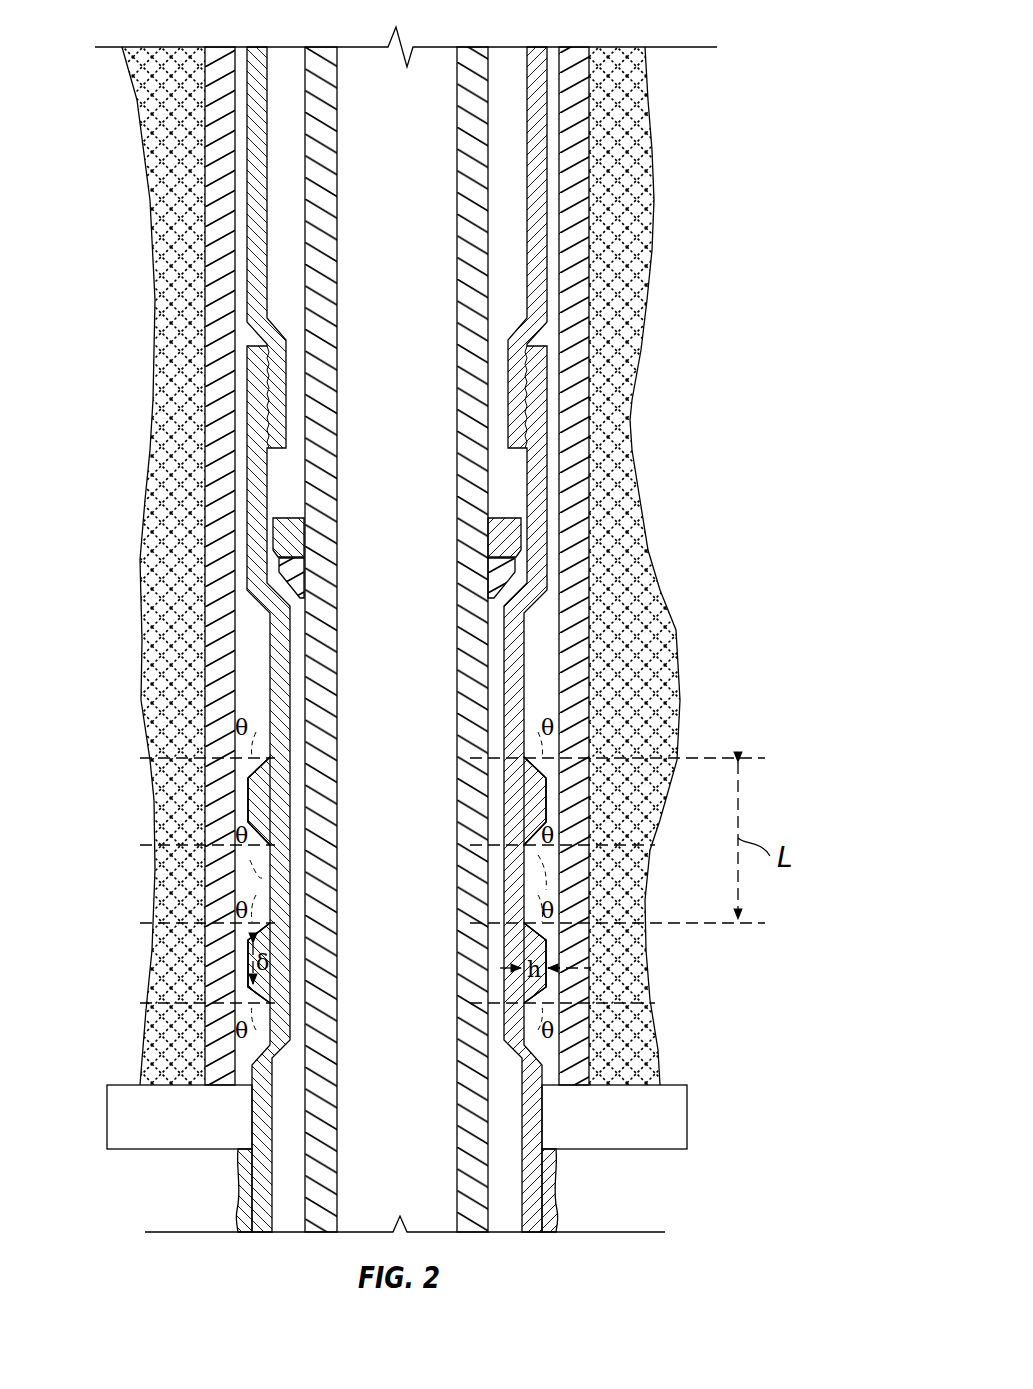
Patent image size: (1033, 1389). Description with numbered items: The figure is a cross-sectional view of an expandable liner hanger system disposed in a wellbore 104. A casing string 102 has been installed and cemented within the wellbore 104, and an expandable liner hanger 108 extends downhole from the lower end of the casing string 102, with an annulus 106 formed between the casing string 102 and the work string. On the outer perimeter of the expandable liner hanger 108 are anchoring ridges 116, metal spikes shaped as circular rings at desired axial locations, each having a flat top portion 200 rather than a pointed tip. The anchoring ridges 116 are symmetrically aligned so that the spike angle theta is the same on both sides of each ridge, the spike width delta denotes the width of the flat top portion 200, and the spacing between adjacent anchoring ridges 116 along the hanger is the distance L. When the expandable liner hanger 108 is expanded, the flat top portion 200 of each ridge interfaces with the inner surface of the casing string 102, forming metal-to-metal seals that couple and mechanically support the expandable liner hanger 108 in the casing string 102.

The casing string 102 is at (575, 555).
The wellbore 104 is at (652, 63).
The annulus 106 is at (535, 1182).
The expandable liner hanger 108 is at (517, 663).
The anchoring ridges 116 is at (265, 800).
The flat top portion 200 is at (246, 800).